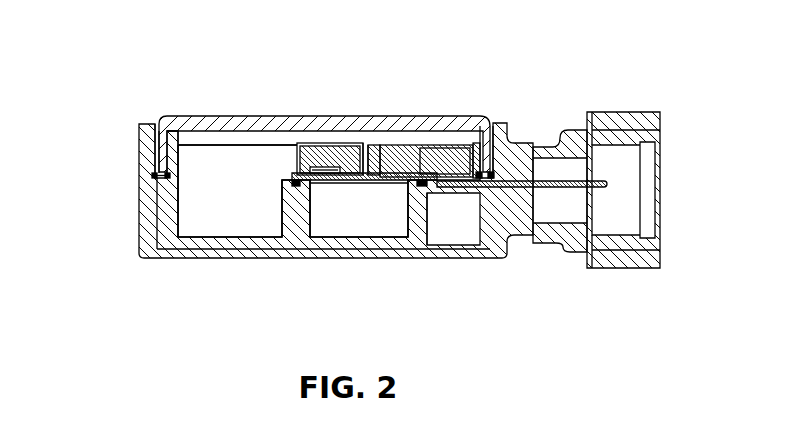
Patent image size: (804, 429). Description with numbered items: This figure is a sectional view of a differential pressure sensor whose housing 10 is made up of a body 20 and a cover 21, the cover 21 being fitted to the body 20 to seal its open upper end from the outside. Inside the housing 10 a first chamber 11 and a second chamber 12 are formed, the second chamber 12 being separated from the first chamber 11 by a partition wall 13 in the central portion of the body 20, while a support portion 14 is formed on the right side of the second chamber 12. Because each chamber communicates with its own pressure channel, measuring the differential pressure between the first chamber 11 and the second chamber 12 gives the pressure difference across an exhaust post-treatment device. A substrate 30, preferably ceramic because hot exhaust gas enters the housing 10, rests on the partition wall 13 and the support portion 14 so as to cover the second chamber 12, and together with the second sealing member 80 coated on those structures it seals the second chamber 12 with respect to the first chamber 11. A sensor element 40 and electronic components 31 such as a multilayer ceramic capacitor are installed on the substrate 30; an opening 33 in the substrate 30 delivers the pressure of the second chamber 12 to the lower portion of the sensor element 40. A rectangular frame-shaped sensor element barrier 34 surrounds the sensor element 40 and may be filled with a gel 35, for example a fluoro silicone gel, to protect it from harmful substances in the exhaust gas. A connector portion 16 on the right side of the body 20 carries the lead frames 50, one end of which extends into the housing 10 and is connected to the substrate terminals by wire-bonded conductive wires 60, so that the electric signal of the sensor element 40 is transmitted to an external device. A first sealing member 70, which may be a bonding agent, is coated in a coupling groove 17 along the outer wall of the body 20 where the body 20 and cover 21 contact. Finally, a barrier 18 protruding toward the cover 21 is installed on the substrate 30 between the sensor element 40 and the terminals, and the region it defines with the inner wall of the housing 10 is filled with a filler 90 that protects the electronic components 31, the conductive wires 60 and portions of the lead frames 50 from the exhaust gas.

The housing 10 is at (309, 182).
The first chamber 11 is at (241, 156).
The second chamber 12 is at (350, 215).
The partition wall 13 is at (295, 213).
The support portion 14 is at (418, 216).
The connector portion 16 is at (620, 258).
The coupling groove 17 is at (173, 145).
The barrier 18 is at (367, 150).
The body 20 is at (147, 188).
The cover 21 is at (168, 127).
The substrate 30 is at (404, 160).
The electronic components 31 is at (388, 150).
The opening 33 is at (362, 213).
The sensor element barrier 34 is at (292, 170).
The gel 35 is at (340, 162).
The sensor element 40 is at (318, 165).
The lead frames 50 is at (552, 180).
The conductive wires 60 is at (447, 158).
The first sealing member 70 is at (170, 186).
The second sealing member 80 is at (292, 186).
The filler 90 is at (470, 160).